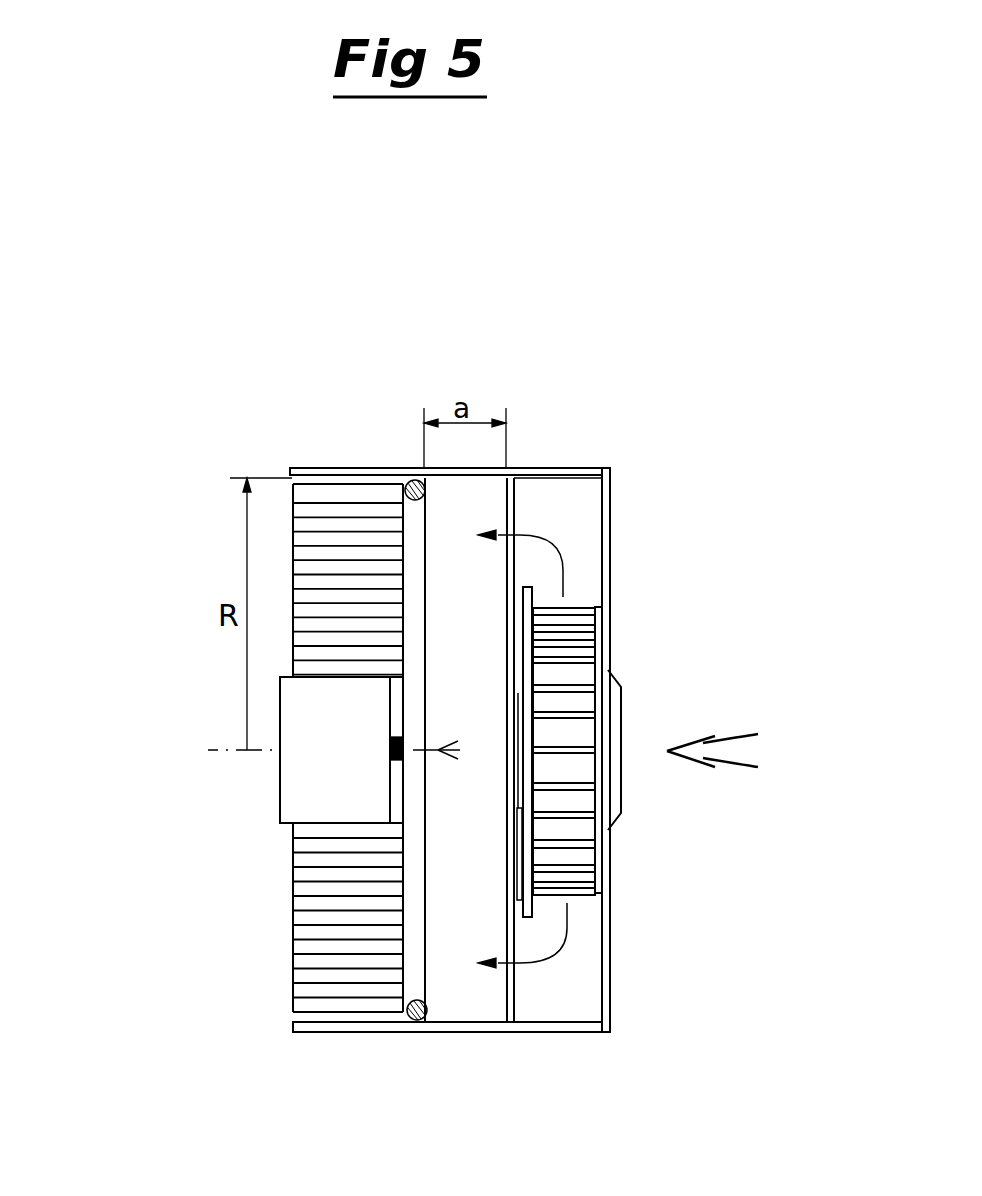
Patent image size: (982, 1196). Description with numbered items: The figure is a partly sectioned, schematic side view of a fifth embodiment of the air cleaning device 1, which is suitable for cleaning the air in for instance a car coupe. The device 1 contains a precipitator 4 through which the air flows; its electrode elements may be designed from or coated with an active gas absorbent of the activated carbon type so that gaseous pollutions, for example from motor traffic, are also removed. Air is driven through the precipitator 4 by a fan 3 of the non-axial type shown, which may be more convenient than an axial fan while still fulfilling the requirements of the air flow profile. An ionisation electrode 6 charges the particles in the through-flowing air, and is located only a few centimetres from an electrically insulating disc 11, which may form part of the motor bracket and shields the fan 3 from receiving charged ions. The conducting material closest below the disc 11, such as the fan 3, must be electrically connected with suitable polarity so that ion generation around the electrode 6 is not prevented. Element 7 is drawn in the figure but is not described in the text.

The device 1 is at (207, 434).
The fan 3 is at (580, 603).
The precipitator 4 is at (317, 945).
The ionisation electrode 6 is at (456, 766).
The flow direction arrow 7 is at (733, 722).
The electrically insulating disc 11 is at (512, 505).